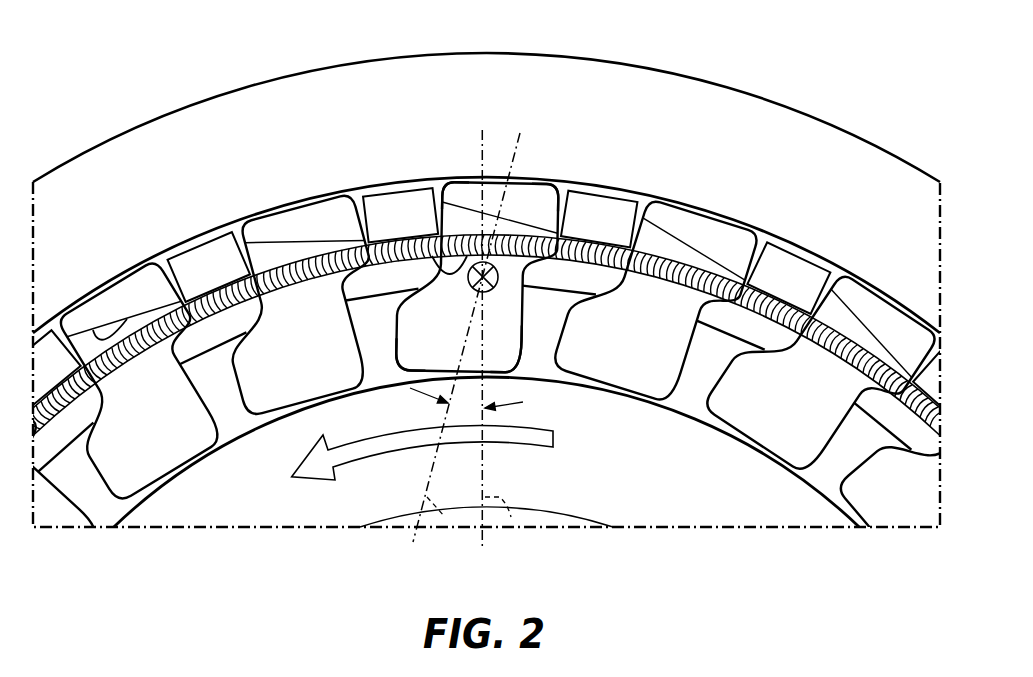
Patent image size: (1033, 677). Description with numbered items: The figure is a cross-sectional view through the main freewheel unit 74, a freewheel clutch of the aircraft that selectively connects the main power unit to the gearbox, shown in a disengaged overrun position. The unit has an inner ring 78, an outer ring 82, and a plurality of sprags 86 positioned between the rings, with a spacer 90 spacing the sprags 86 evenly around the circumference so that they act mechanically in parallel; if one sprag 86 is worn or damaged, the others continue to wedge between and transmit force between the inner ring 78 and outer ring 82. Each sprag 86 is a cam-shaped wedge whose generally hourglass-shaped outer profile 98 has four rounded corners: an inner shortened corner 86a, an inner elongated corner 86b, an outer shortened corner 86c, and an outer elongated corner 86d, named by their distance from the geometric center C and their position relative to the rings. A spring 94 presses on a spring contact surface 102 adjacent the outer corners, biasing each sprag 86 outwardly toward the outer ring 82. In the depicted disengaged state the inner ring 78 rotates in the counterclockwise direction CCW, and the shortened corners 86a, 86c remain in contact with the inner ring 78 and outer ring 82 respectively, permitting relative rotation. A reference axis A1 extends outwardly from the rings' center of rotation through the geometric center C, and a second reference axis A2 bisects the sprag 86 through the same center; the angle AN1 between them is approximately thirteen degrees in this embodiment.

The main freewheel unit 74 is at (707, 63).
The inner ring 78 is at (748, 485).
The outer ring 82 is at (553, 88).
The sprag 86 is at (516, 352).
The inner shortened corner 86a is at (521, 368).
The inner elongated corner 86b is at (402, 366).
The outer shortened corner 86c is at (445, 180).
The outer elongated corner 86d is at (553, 184).
The spacer 90 is at (200, 248).
The spring 94 is at (777, 307).
The outer profile 98 is at (773, 310).
The spring contact surface 102 is at (93, 337).
The geometric center C is at (430, 250).
The reference axis A1 is at (511, 353).
The second reference axis A2 is at (466, 354).
The angle AN1 is at (513, 403).
The counterclockwise direction CCW is at (308, 481).